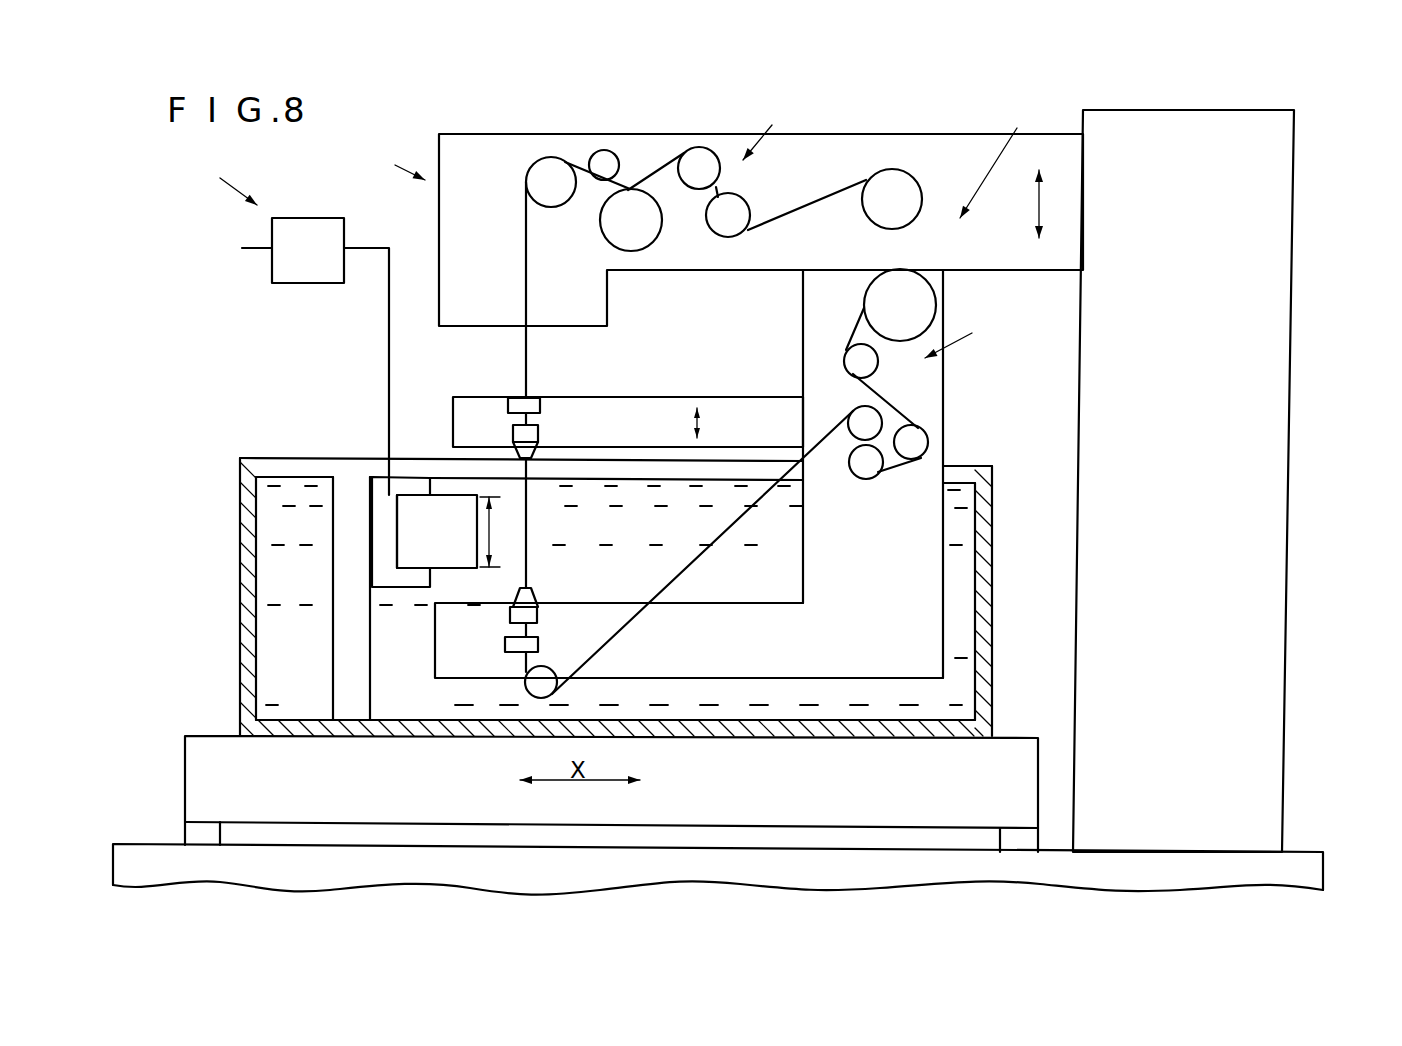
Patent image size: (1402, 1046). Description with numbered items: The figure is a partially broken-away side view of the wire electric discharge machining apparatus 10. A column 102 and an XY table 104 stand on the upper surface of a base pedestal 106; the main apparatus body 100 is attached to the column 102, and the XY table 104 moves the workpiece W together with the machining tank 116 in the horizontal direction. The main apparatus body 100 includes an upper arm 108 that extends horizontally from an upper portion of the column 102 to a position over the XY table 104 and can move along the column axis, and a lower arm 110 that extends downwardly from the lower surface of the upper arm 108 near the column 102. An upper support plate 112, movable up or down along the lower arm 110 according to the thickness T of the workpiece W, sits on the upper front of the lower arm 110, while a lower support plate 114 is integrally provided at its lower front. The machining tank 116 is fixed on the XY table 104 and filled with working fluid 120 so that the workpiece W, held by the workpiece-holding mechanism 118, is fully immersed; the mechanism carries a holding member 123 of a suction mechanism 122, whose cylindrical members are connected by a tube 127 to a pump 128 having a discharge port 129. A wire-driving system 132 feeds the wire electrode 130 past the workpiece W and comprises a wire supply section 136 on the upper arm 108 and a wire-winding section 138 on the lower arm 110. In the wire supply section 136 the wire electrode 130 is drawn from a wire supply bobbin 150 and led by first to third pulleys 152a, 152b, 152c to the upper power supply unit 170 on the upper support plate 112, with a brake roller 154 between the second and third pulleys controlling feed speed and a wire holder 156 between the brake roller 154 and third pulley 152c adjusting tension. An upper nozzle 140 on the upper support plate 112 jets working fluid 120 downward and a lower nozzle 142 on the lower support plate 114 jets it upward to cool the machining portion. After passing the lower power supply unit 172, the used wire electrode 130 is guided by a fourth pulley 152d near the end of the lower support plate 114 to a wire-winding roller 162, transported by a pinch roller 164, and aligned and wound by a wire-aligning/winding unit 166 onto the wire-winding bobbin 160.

The wire electric discharge machining apparatus 10 is at (1343, 141).
The main apparatus body 100 is at (387, 165).
The column 102 is at (1293, 328).
The XY table 104 is at (1015, 800).
The base pedestal 106 is at (1295, 853).
The upper arm 108 is at (830, 133).
The lower arm 110 is at (945, 530).
The upper support plate 112 is at (620, 398).
The lower support plate 114 is at (720, 665).
The machining tank 116 is at (238, 633).
The workpiece-holding mechanism 118 is at (333, 527).
The working fluid 120 is at (273, 665).
The suction mechanism 122 is at (218, 183).
The holding member 123 is at (383, 542).
The tube 127 is at (365, 248).
The pump 128 is at (298, 235).
The discharge port 129 is at (248, 250).
The wire electrode 130 is at (798, 203).
The wire-driving system 132 is at (1001, 169).
The wire supply section 136 is at (773, 130).
The wire-winding section 138 is at (906, 474).
The upper nozzle 140 is at (535, 430).
The lower nozzle 142 is at (533, 618).
The wire supply bobbin 150 is at (912, 193).
The first pulley 152a is at (723, 224).
The second pulley 152b is at (699, 162).
The third pulley 152c is at (548, 170).
The fourth pulley 152d is at (524, 690).
The brake roller 154 is at (633, 238).
The wire holder 156 is at (605, 158).
The wire-winding bobbin 160 is at (922, 302).
The wire-winding roller 162 is at (862, 422).
The pinch roller 164 is at (863, 470).
The wire-aligning/winding unit 166 is at (855, 363).
The upper power supply unit 170 is at (515, 402).
The lower power supply unit 172 is at (505, 645).
The workpiece W is at (443, 570).
The thickness of workpiece T is at (495, 532).